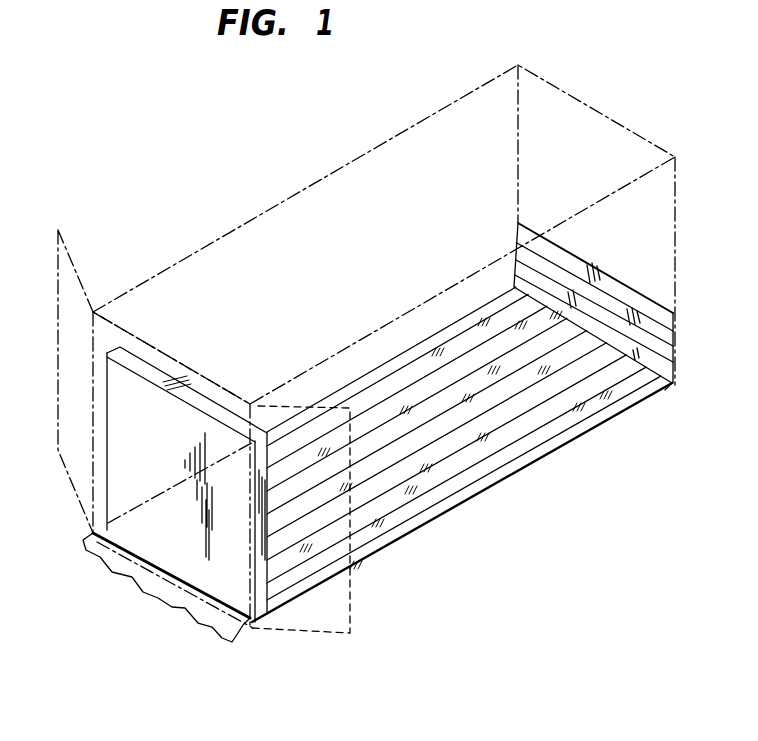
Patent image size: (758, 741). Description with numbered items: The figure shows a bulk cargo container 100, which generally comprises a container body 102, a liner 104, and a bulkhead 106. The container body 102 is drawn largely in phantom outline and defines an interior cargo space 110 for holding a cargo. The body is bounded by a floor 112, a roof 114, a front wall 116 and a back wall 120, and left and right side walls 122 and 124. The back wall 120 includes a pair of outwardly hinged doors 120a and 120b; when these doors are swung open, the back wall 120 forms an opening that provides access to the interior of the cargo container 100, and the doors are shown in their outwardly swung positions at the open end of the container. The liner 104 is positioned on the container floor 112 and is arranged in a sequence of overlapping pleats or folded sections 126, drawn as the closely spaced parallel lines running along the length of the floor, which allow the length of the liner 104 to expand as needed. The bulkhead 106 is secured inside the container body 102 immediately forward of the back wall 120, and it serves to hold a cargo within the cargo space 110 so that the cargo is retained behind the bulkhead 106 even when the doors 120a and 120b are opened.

The cargo container 100 is at (340, 373).
The container body 102 is at (388, 329).
The liner 104 is at (533, 449).
The bulkhead 106 is at (127, 483).
The interior cargo space 110 is at (207, 397).
The floor 112 is at (360, 563).
The roof 114 is at (460, 127).
The front wall 116 is at (612, 140).
The back wall 120 is at (103, 333).
The outwardly hinged door 120a is at (72, 250).
The outwardly hinged door 120b is at (316, 617).
The left side wall 122 is at (475, 293).
The right side wall 124 is at (248, 257).
The overlapping pleats or folded sections 126 is at (433, 343).